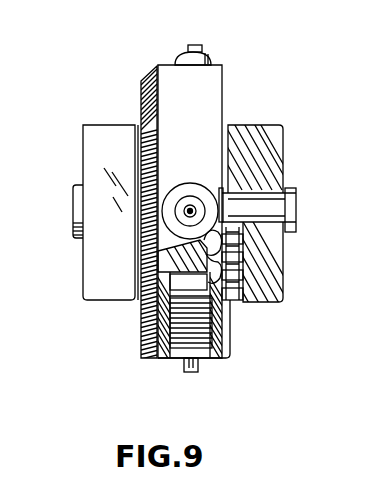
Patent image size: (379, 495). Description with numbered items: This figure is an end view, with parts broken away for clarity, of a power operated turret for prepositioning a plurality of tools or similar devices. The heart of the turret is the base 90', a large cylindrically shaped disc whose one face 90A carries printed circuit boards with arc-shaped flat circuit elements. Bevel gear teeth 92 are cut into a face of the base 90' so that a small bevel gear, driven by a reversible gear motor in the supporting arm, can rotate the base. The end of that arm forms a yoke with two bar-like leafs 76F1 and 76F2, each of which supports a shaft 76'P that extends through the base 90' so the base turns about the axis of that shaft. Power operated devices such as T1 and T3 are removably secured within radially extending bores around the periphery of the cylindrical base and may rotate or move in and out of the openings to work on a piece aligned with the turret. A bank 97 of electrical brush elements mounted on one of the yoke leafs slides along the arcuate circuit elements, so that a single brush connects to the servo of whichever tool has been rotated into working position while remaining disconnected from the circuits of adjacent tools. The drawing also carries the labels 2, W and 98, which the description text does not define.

The power operated device T1 is at (178, 56).
The face of the turret base 90A is at (141, 99).
The base 90' is at (190, 217).
The bar-like leaf 76F2 is at (245, 125).
The frame member 2 is at (6, 187).
The shaft 76'P is at (50, 214).
The bar-like leaf 76F1 is at (95, 275).
The washer / roller W is at (222, 273).
The bevel gear teeth 92 is at (143, 346).
The power operated device T3 is at (183, 360).
The bank of brush elements 97 is at (231, 300).
The nut 98 is at (233, 298).